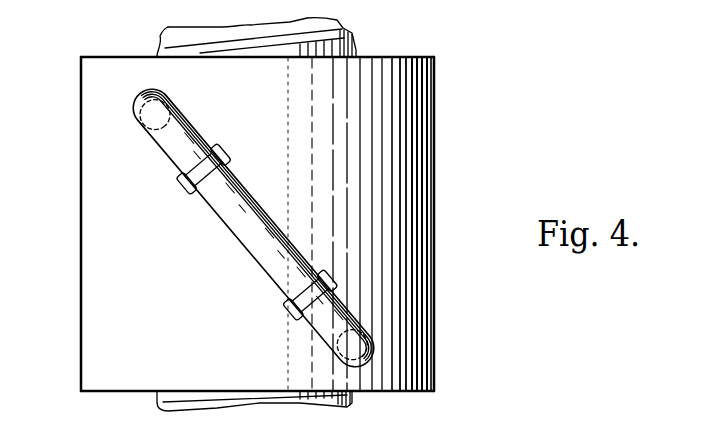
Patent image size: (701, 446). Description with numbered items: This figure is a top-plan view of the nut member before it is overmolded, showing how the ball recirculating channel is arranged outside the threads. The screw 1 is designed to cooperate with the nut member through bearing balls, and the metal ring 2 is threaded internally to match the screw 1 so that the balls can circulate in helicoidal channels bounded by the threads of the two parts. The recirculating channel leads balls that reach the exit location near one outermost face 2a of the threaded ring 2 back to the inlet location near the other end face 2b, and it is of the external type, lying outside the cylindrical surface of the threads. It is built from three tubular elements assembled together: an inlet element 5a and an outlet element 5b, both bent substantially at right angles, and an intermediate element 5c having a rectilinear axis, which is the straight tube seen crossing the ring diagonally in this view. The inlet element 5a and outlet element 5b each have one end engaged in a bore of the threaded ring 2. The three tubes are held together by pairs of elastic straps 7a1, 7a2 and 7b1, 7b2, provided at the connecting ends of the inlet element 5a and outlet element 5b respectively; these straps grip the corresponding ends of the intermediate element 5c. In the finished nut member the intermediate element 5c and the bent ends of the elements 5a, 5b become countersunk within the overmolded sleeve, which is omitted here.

The screw 1 is at (343, 44).
The metal ring 2 is at (430, 183).
The outermost face of the threaded ring 2a is at (99, 56).
The other end face of the threaded ring 2b is at (432, 392).
The inlet element 5a is at (197, 134).
The outlet element 5b is at (352, 323).
The intermediate element 5c is at (283, 238).
The elastic strap 7a1 is at (230, 160).
The elastic strap 7a2 is at (184, 188).
The elastic strap 7b1 is at (332, 273).
The elastic strap 7b2 is at (288, 306).